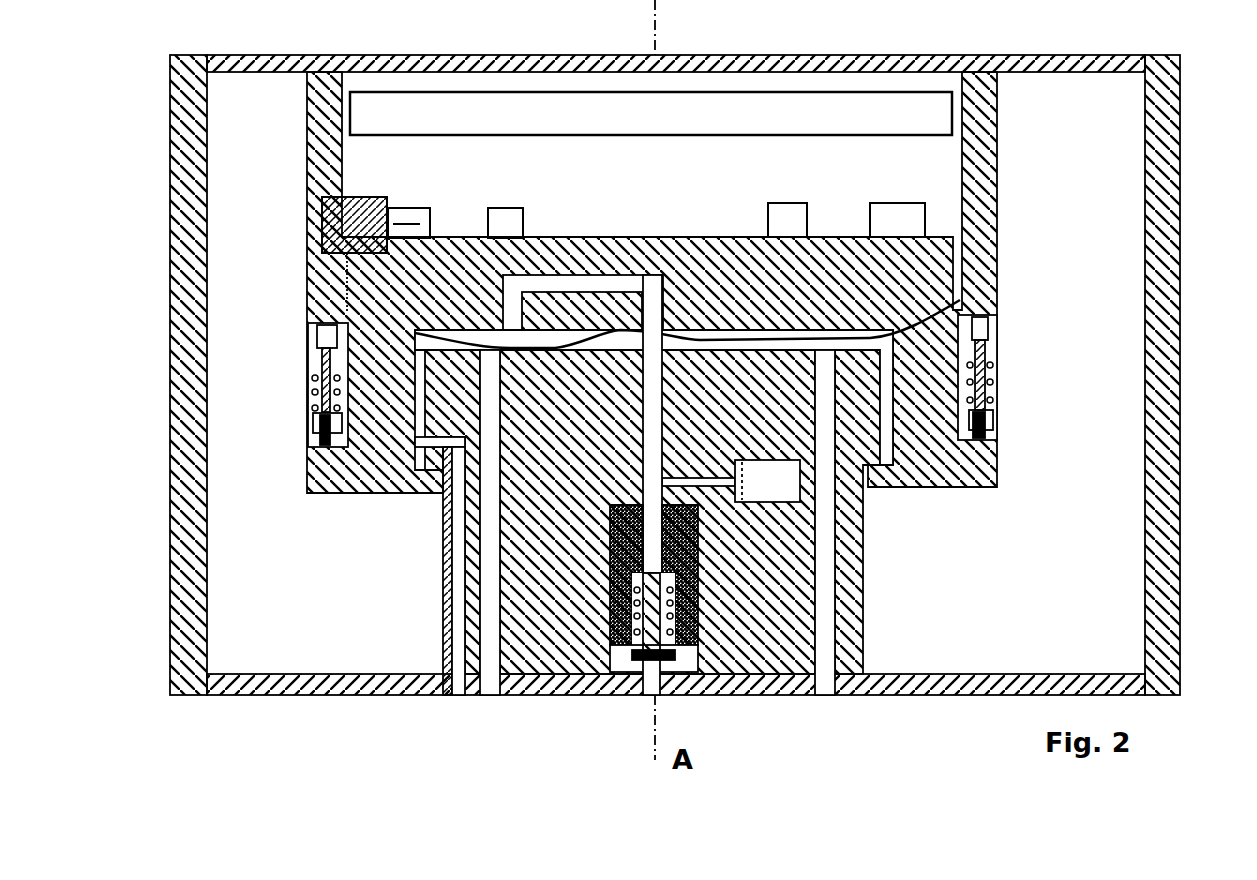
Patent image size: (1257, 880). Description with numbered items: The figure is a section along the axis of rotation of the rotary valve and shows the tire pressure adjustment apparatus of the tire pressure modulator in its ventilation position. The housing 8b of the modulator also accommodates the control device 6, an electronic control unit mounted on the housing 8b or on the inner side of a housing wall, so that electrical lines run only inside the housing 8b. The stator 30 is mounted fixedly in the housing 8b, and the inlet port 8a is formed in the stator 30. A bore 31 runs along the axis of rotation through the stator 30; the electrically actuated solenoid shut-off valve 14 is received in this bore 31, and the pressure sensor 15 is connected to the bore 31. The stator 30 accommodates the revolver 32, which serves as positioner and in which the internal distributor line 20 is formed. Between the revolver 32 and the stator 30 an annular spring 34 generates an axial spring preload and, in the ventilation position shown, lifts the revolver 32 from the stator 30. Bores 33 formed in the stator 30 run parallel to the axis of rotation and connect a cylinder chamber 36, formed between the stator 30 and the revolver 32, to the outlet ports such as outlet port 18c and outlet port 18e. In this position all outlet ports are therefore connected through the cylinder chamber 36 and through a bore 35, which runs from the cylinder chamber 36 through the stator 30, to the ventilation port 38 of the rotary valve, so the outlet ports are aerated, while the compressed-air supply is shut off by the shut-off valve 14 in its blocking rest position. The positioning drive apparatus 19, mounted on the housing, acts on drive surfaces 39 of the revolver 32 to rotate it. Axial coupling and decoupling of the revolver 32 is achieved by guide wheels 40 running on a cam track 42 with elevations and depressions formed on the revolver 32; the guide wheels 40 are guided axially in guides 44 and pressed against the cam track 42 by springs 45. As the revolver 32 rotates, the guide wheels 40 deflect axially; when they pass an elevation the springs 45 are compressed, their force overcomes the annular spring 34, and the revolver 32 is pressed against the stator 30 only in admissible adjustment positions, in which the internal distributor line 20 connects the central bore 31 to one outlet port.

The control device 6 is at (683, 98).
The inlet port 8a is at (645, 700).
The housing 8b is at (1182, 128).
The 2/2 shut-off valve 14 is at (757, 563).
The pressure sensor 15 is at (790, 488).
The outlet port 18c is at (830, 700).
The outlet port 18e is at (478, 700).
The positioning drive apparatus 19 is at (322, 205).
The internal distributor line 20 is at (571, 283).
The stator 30 is at (505, 700).
The bore 31 is at (500, 520).
The revolver 32 is at (963, 487).
The bores 33 is at (820, 640).
The annular spring 34 is at (960, 300).
The bore 35 is at (445, 593).
The cylinder chamber 36 is at (730, 335).
The ventilation port 38 is at (452, 700).
The drive surfaces 39 is at (405, 210).
The guide wheels 40 is at (325, 430).
The cam track 42 is at (325, 445).
The guides 44 is at (318, 333).
The springs 45 is at (318, 382).